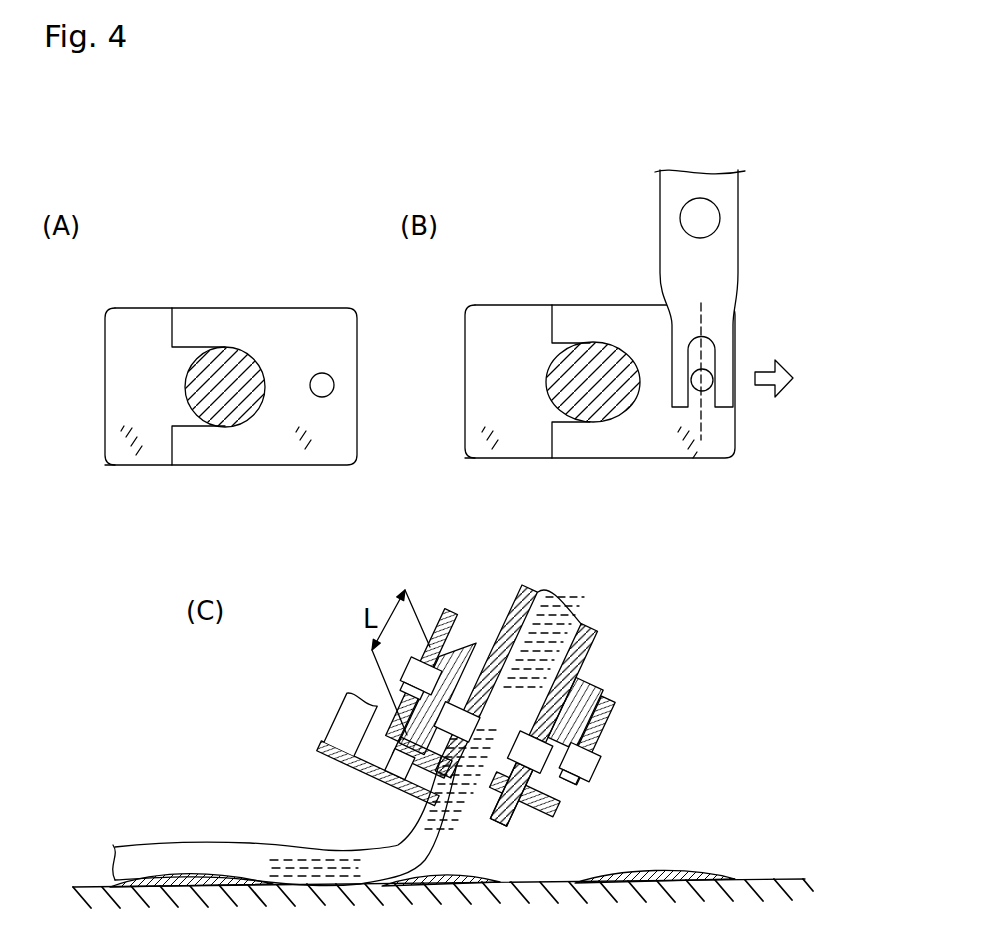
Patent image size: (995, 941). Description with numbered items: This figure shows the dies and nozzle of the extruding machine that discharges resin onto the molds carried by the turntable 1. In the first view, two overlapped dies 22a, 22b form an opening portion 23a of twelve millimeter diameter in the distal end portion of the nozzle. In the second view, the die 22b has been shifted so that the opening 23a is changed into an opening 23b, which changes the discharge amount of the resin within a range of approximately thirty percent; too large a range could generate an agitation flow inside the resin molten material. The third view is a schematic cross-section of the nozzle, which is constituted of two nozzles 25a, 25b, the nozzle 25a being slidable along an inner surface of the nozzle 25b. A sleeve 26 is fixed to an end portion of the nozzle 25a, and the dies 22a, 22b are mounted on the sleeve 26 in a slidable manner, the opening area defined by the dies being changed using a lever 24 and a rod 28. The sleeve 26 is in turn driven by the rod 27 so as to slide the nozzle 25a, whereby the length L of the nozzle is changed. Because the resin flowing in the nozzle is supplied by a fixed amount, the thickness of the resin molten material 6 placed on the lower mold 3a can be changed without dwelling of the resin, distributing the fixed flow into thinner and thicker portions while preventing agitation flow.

The turntable 1 is at (462, 939).
The lower mold 3a is at (672, 870).
The resin molten material 6 is at (300, 862).
The die 22a is at (130, 318).
The die 22b is at (233, 322).
The opening portion 23a is at (243, 402).
The opening 23b is at (592, 400).
The lever 24 is at (728, 257).
The nozzle 25a is at (573, 678).
The nozzle 25b is at (592, 645).
The sleeve 26 is at (545, 795).
The rod 27 is at (617, 723).
The rod 28 is at (338, 718).